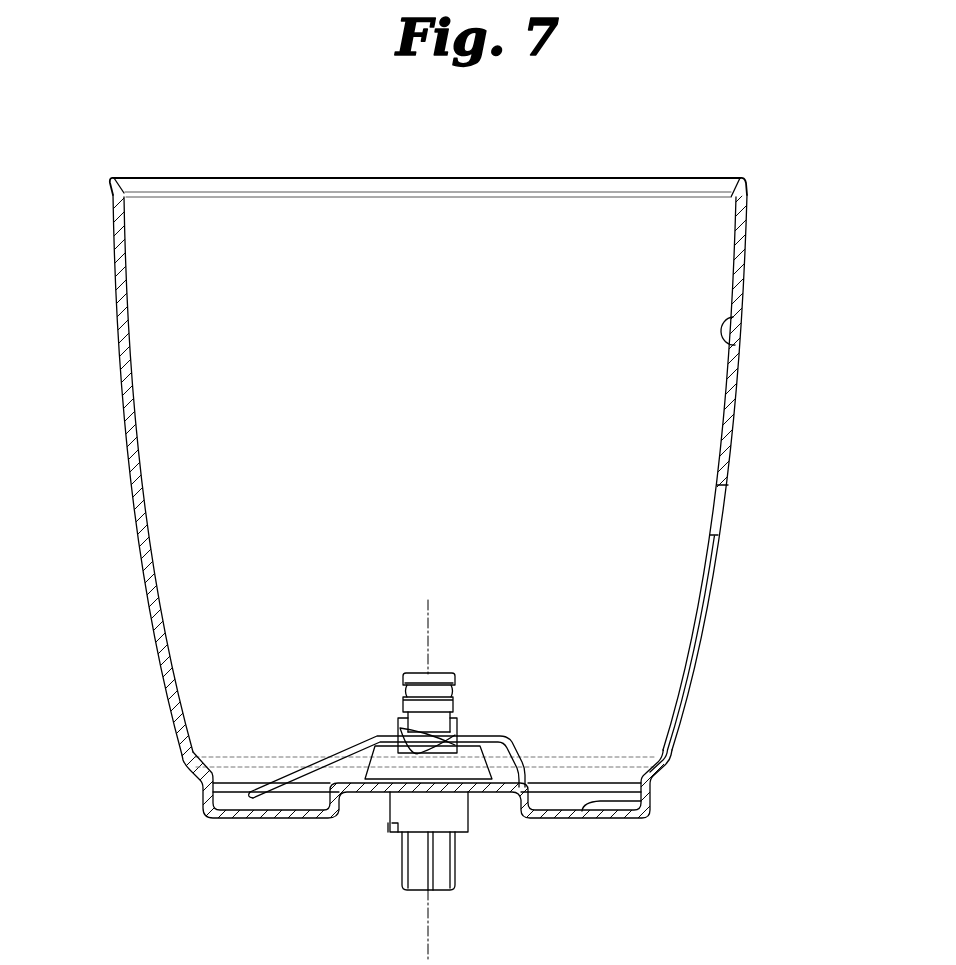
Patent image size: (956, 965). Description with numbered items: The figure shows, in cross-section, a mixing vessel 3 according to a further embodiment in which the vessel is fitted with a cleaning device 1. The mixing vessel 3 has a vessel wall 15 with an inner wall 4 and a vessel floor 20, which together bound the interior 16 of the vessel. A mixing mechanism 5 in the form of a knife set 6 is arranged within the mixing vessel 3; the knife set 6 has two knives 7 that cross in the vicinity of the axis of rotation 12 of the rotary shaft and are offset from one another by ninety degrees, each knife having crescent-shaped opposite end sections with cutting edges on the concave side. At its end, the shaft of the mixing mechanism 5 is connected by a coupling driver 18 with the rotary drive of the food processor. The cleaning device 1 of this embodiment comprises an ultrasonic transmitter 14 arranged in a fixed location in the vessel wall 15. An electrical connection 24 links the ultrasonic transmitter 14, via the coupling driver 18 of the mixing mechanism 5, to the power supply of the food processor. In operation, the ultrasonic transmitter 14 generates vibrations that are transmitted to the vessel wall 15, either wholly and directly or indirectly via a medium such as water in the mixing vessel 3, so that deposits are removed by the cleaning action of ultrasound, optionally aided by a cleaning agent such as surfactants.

The cleaning device 1 is at (453, 571).
The mixing vessel 3 is at (756, 251).
The inner wall 4 is at (726, 326).
The mixing mechanism 5 is at (522, 743).
The knife set 6 is at (470, 700).
The knives 7 is at (567, 790).
The axis of rotation 12 is at (428, 933).
The ultrasonic transmitter 14 is at (716, 510).
The vessel wall 15 is at (728, 400).
The interior 16 is at (232, 480).
The coupling driver 18 is at (438, 877).
The vessel floor 20 is at (642, 796).
The electrical connection 24 is at (710, 572).